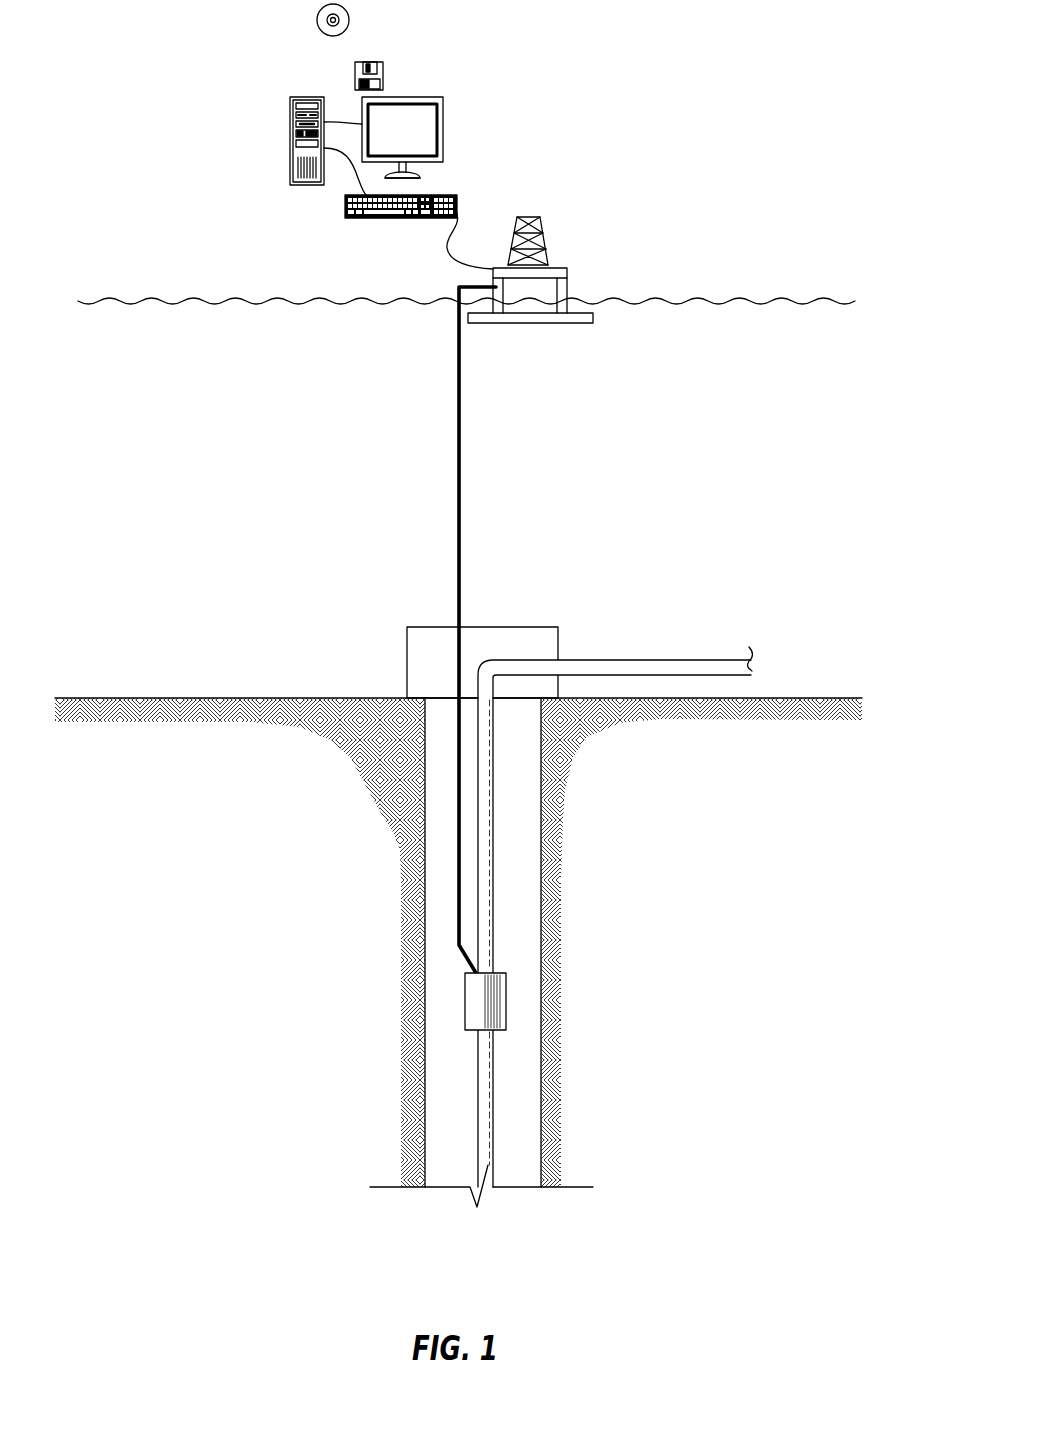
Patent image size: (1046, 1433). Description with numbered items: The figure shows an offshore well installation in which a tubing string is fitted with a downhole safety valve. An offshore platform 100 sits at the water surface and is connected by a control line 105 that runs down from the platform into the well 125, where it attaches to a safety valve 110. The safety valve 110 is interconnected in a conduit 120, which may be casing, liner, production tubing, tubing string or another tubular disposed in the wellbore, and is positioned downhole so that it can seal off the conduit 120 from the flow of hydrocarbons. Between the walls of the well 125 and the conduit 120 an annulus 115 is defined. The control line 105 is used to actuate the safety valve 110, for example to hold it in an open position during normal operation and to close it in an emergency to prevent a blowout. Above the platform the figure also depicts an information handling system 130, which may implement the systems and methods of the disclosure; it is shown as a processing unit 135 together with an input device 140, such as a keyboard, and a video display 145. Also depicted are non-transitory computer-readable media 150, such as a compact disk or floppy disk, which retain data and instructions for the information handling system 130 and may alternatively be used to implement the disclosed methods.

The offshore platform 100 is at (575, 230).
The control line 105 is at (461, 593).
The safety valve 110 is at (506, 992).
The annulus 115 is at (530, 922).
The conduit 120 is at (495, 818).
The well 125 is at (541, 872).
The information handling system 130 is at (318, 200).
The processing unit 135 is at (303, 97).
The input device 140 is at (447, 196).
The video display 145 is at (426, 97).
The non-transitory computer-readable media 150 is at (348, 22).